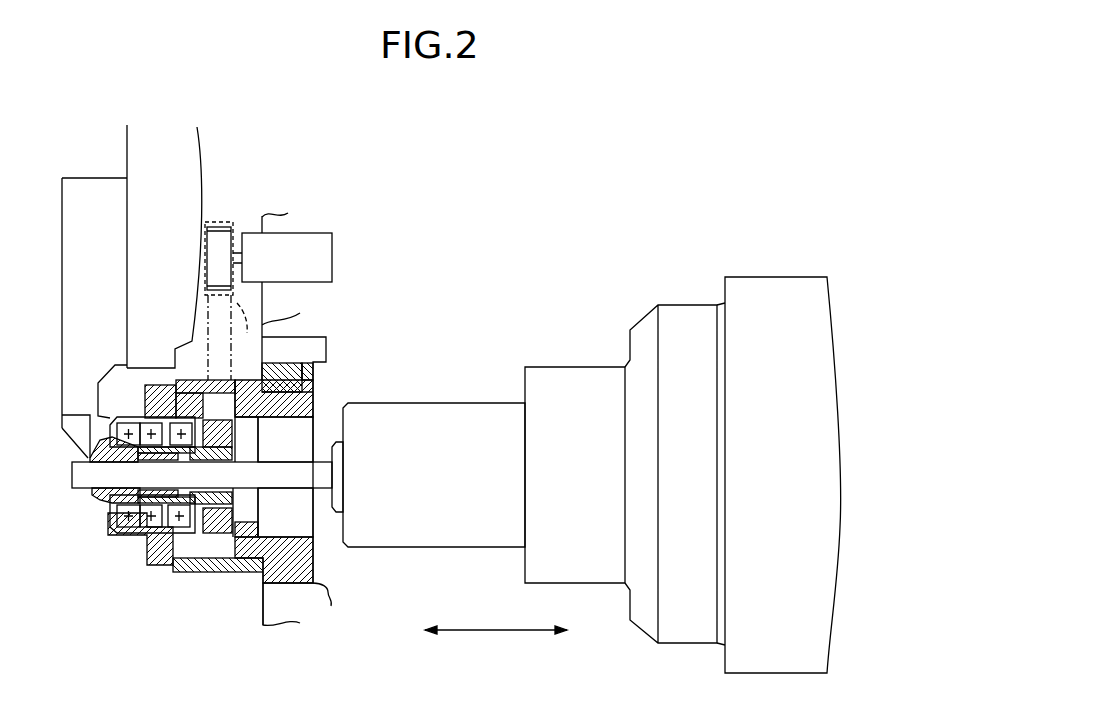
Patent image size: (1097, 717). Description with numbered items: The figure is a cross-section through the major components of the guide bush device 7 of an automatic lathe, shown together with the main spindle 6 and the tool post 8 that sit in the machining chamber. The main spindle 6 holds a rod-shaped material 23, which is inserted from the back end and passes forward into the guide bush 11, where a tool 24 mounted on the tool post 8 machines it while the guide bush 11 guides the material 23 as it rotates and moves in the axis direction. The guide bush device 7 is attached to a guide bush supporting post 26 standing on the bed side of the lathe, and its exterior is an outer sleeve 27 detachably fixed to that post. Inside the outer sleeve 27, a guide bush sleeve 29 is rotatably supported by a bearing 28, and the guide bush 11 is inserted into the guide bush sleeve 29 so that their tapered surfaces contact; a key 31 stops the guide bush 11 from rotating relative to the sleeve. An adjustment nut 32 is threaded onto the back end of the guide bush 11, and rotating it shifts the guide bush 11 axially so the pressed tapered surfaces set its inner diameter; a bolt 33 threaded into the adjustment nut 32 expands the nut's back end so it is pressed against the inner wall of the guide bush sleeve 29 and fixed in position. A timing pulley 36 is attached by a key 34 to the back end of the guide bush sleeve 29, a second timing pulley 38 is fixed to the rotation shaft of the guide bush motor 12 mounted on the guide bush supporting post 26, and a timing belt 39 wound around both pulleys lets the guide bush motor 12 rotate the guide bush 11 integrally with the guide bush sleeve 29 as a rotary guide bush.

The main spindle 6 is at (547, 392).
The guide bush device 7 is at (157, 567).
The tool post 8 is at (122, 147).
The guide bush 11 is at (112, 495).
The guide bush motor 12 is at (317, 245).
The rod-shaped material 23 is at (287, 477).
The tool 24 is at (70, 427).
The guide bush supporting post 26 is at (277, 592).
The outer sleeve 27 is at (220, 557).
The bearing 28 is at (172, 420).
The guide bush sleeve 29 is at (95, 498).
The key 31 is at (88, 457).
The adjustment nut 32 is at (173, 500).
The bolt 33 is at (236, 442).
The key 34 is at (206, 436).
The timing pulley 36 is at (245, 560).
The timing pulley 38 is at (237, 232).
The timing belt 39 is at (247, 334).